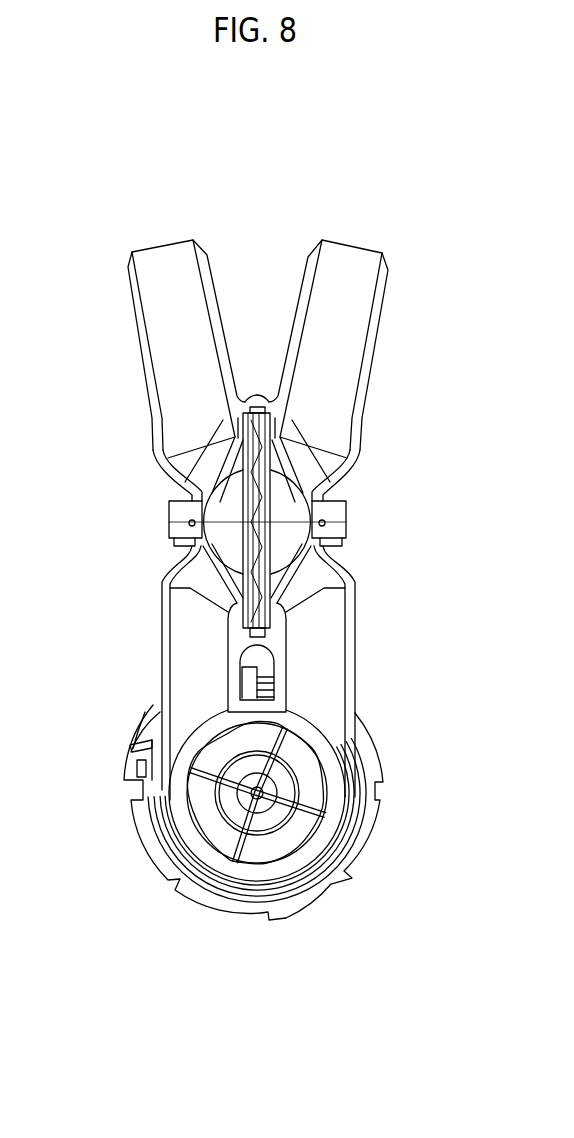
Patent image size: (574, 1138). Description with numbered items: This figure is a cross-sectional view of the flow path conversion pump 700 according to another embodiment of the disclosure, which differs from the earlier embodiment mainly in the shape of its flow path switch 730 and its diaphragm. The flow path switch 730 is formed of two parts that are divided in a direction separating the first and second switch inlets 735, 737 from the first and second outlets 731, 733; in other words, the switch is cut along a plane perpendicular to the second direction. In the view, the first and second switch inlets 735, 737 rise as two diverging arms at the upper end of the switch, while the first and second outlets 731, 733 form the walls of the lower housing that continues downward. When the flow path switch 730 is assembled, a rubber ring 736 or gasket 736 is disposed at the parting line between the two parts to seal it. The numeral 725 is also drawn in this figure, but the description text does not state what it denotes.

The flow path conversion pump 700 is at (90, 256).
The fan 725 is at (263, 792).
The flow path switch 730 is at (264, 470).
The first outlet 731 is at (162, 643).
The second outlet 733 is at (355, 650).
The first switch inlet 735 is at (143, 338).
The rubber ring or gasket 736 is at (346, 522).
The second switch inlet 737 is at (380, 320).